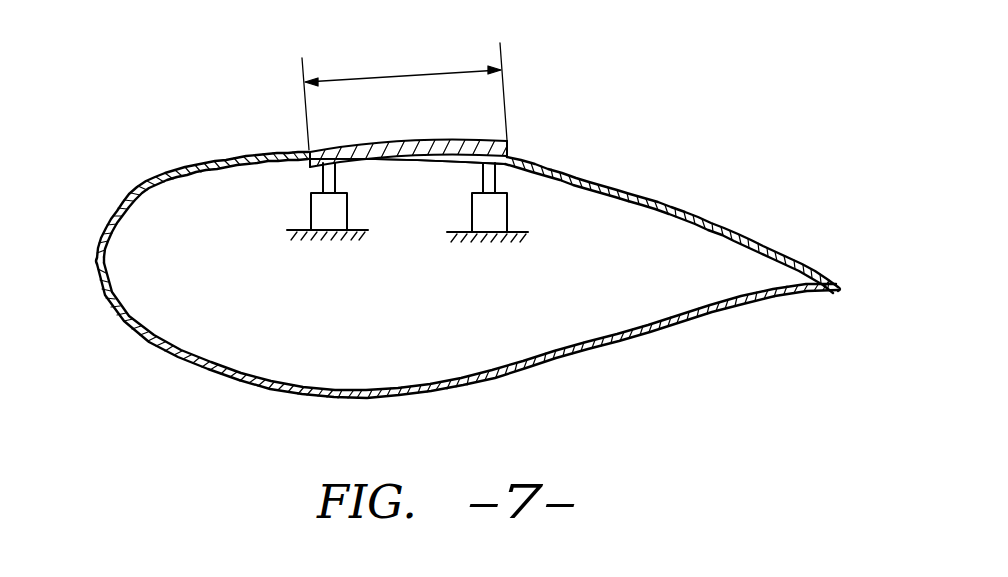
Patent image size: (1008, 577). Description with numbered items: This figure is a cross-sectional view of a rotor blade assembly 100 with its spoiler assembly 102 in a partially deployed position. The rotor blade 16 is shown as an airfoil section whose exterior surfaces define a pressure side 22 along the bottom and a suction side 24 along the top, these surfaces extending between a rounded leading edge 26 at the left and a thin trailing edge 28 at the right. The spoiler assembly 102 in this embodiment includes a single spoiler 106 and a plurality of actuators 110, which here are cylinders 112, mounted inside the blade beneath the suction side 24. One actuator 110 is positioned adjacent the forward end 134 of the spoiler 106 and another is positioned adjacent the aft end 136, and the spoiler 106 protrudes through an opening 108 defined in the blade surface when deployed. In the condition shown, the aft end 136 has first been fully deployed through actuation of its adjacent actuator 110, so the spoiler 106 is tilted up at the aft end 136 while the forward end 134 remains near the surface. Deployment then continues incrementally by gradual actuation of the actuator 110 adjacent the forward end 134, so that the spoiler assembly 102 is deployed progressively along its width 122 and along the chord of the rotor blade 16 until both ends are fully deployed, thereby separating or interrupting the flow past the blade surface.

The rotor blade 16 is at (471, 291).
The pressure side 22 is at (480, 390).
The suction side 24 is at (607, 187).
The leading edge 26 is at (95, 253).
The trailing edge 28 is at (847, 288).
The rotor blade assembly 100 is at (452, 145).
The spoiler assembly 102 is at (453, 110).
The spoiler 106 is at (349, 145).
The opening 108 is at (448, 175).
The actuator 110 is at (388, 224).
The cylinder 112 is at (310, 208).
The width 122 is at (375, 77).
The forward end 134 is at (292, 161).
The aft end 136 is at (507, 153).